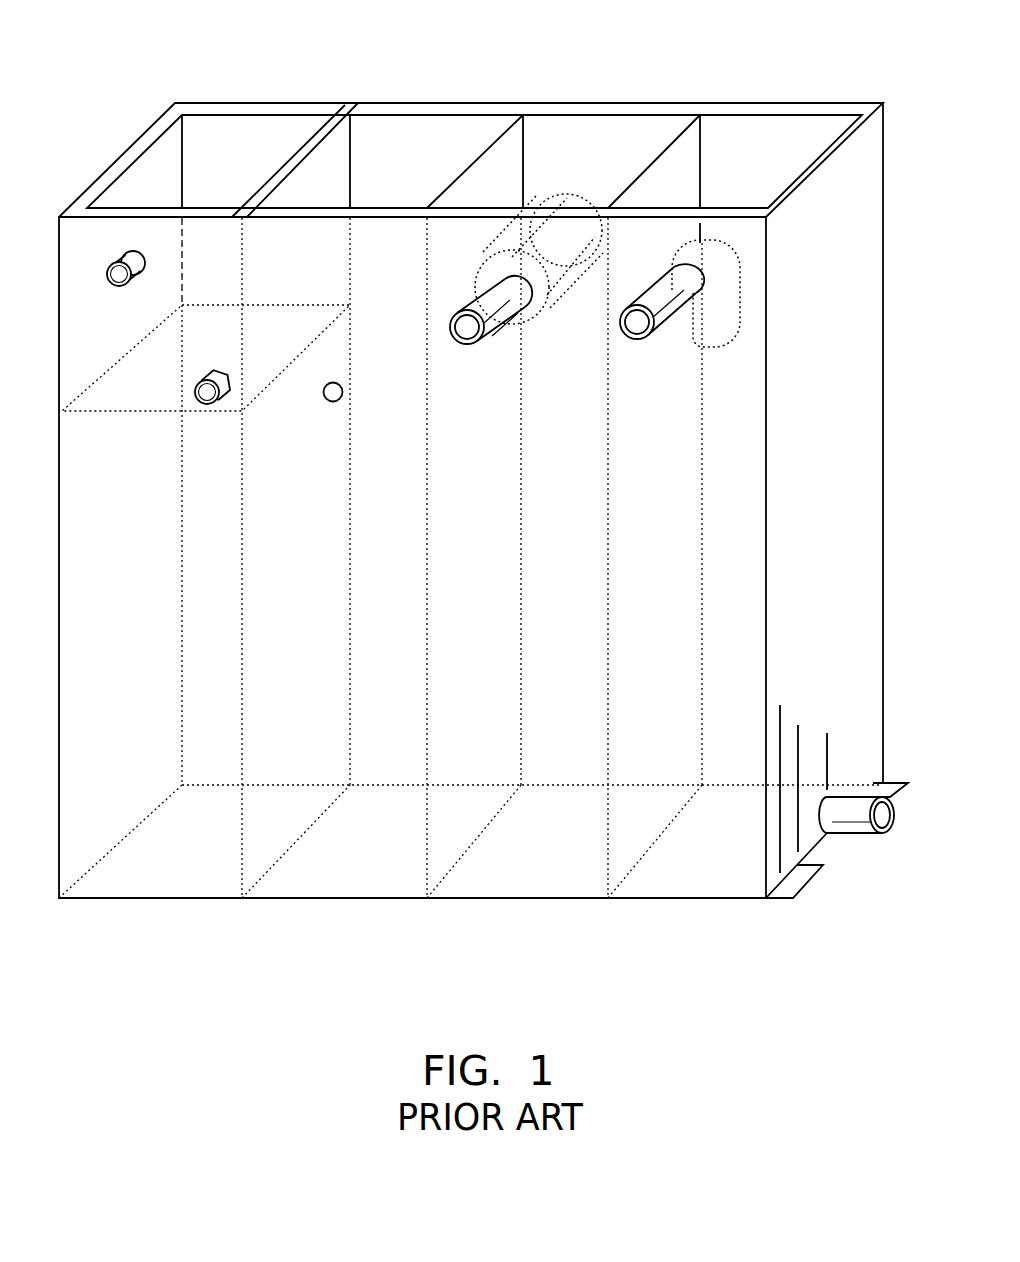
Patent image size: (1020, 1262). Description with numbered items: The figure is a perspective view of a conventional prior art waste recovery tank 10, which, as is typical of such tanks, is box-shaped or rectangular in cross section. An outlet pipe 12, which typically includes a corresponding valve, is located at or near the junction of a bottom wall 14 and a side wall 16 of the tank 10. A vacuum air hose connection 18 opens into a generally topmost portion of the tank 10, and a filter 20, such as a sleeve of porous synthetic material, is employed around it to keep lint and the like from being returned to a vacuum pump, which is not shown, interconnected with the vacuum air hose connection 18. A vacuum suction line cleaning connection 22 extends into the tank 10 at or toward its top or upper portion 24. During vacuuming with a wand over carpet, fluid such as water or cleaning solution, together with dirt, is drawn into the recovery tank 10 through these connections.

The recovery tank 10 is at (322, 932).
The outlet pipe 12 is at (868, 840).
The bottom wall 14 is at (553, 856).
The side wall 16 is at (838, 491).
The vacuum air hose connection 18 is at (503, 313).
The filter 20 is at (552, 197).
The vacuum suction line connection 22 is at (657, 282).
The upper portion 24 is at (773, 153).